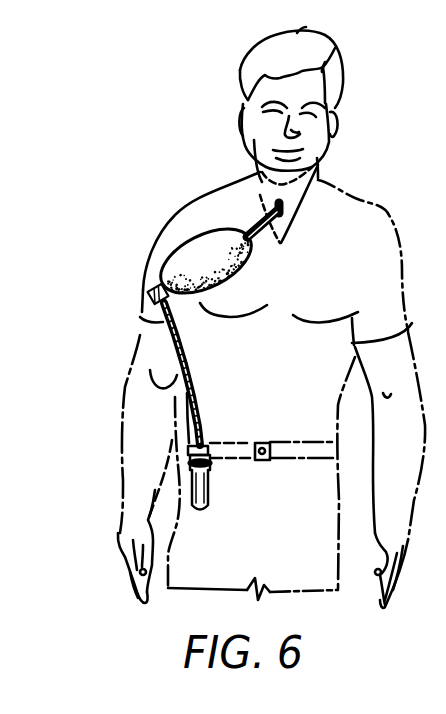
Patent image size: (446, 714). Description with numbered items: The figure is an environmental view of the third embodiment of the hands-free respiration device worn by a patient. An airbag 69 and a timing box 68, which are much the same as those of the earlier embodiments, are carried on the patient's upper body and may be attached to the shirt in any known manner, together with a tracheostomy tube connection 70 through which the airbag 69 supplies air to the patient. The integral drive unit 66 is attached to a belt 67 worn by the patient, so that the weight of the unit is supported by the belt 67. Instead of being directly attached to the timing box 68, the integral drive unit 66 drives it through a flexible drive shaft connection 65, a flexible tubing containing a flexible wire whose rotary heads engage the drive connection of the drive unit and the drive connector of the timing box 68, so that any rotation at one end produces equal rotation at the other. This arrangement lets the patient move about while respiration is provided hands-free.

The flexible drive shaft connection 65 is at (188, 340).
The integral drive unit 66 is at (207, 487).
The belt 67 is at (190, 452).
The timing box 68 is at (148, 290).
The airbag 69 is at (207, 258).
The tracheostomy tube connection 70 is at (257, 220).